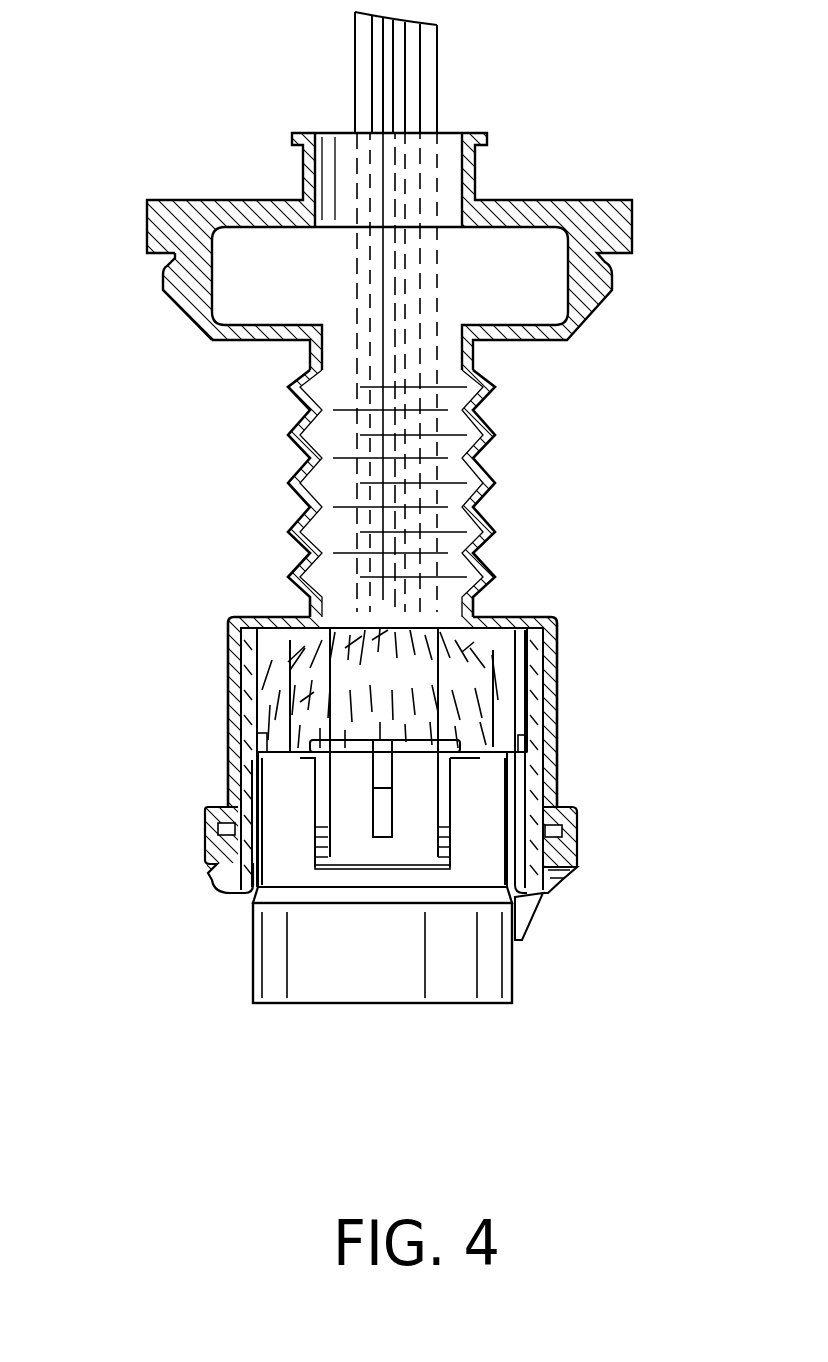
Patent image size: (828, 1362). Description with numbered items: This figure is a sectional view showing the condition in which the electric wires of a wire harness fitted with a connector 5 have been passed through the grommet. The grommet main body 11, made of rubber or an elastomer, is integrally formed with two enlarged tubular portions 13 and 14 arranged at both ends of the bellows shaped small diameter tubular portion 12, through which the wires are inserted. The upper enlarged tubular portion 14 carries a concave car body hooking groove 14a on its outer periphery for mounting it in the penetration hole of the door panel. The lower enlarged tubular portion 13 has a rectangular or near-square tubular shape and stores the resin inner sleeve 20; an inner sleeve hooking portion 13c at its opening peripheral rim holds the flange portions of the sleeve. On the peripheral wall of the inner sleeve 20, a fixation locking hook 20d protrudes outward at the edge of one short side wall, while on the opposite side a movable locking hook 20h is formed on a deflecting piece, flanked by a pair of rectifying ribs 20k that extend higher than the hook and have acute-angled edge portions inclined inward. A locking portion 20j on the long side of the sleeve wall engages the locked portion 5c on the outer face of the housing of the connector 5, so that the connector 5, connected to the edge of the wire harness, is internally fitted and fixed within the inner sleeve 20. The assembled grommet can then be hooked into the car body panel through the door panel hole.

The grommet main body 11 is at (349, 339).
The bellows shaped small diameter tubular portion 12 is at (495, 435).
The enlarged tubular portion 13 is at (454, 742).
The inner sleeve hooking portion 13c is at (578, 828).
The enlarged tubular portion 14 is at (147, 220).
The car body hooking groove 14a is at (163, 264).
The inner sleeve 20 is at (424, 851).
The fixation locking hook 20d is at (247, 890).
The movable locking hook 20h is at (555, 872).
The locking portion 20j is at (418, 852).
The rectifying ribs 20k is at (535, 902).
The connector 5 is at (339, 915).
The locked portion 5c is at (382, 820).